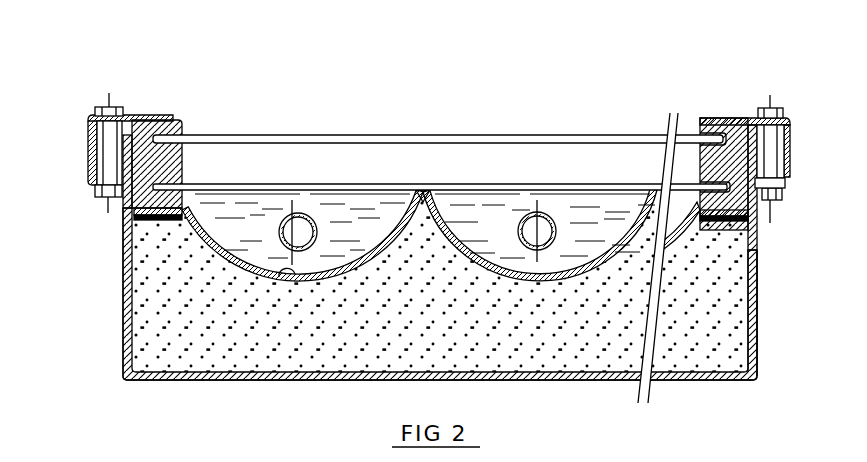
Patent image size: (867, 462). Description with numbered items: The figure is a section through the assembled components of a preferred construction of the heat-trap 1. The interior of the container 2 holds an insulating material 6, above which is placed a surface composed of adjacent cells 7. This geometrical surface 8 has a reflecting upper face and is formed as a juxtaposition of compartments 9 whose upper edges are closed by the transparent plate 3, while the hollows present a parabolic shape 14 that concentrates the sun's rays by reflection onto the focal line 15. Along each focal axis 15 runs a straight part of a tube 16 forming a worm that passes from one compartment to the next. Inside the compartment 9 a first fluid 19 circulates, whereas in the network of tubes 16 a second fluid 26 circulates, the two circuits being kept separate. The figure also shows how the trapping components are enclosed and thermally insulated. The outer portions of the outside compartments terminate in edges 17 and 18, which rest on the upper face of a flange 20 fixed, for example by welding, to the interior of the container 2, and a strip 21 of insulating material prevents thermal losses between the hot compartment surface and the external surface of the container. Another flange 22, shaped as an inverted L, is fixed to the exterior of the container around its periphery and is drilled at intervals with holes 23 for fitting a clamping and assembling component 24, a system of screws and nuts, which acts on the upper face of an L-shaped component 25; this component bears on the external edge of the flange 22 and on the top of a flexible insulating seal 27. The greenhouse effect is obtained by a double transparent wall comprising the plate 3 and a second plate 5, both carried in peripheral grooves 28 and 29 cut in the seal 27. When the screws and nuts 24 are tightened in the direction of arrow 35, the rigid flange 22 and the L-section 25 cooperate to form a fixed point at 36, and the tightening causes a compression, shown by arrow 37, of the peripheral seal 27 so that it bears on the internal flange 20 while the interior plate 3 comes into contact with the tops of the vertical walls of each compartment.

The heat-trap 1 is at (112, 300).
The container 2 is at (123, 372).
The transparent plate 3 is at (440, 186).
The second plate 5 is at (405, 145).
The insulating material 6 is at (446, 330).
The cells 7 is at (358, 262).
The geometrical surface 8 is at (290, 276).
The compartment 9 is at (395, 202).
The parabolic shape 14 is at (489, 235).
The focal line 15 is at (305, 213).
The tube 16 is at (292, 200).
The edge 17 is at (128, 220).
The edge 18 is at (757, 233).
The first fluid 19 is at (279, 236).
The flange 20 is at (752, 270).
The strip of insulating material 21 is at (760, 243).
The flange 22 is at (120, 204).
The holes 23 is at (120, 181).
The clamping and assembling component 24 is at (128, 119).
The L-shaped component 25 is at (175, 116).
The second fluid 26 is at (538, 228).
The flexible insulating seal 27 is at (713, 118).
The peripheral groove 28 is at (775, 183).
The peripheral groove 29 is at (770, 138).
The tightening arrow 35 is at (773, 80).
The fixed point 36 is at (782, 186).
The compression arrow 37 is at (733, 111).